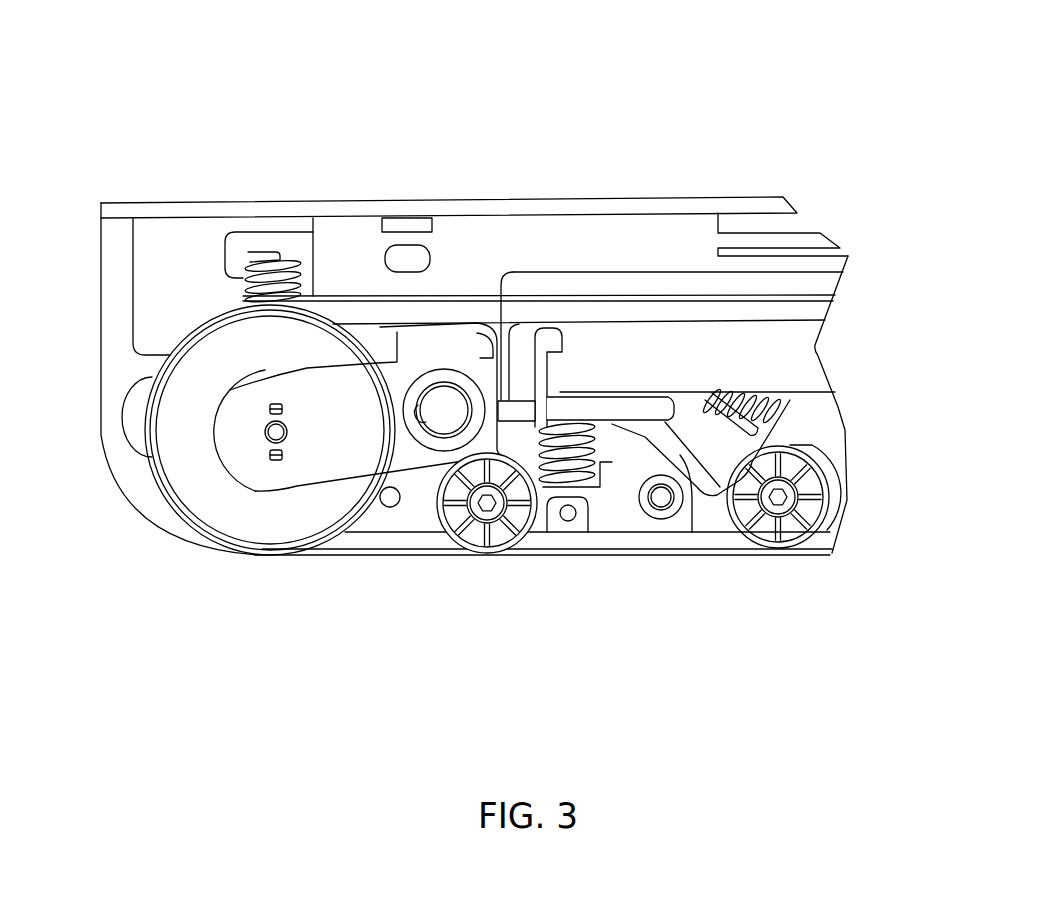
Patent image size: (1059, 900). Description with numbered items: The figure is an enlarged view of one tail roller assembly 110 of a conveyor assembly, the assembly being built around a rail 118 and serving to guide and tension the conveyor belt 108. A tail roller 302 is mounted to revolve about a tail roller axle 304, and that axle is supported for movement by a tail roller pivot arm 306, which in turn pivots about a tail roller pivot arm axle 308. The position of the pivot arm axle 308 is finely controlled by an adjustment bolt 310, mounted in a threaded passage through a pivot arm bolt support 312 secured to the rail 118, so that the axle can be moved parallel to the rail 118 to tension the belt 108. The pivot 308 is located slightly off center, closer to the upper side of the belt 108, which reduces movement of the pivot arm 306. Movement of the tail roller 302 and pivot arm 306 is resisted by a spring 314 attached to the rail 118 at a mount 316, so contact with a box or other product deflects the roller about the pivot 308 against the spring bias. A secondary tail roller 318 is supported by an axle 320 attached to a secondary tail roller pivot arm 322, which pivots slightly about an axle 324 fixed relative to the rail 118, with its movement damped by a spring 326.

The tail roller assembly 110 is at (292, 90).
The rail 118 is at (362, 198).
The conveyor belt 108 is at (772, 290).
The spring 314 is at (243, 298).
The mount 316 is at (273, 245).
The tail roller 302 is at (257, 512).
The tail roller axle 304 is at (273, 432).
The tail roller pivot arm 306 is at (347, 433).
The tail roller pivot arm axle 308 is at (440, 415).
The adjustment bolt 310 is at (518, 398).
The pivot arm bolt support 312 is at (540, 375).
The spring 326 is at (573, 480).
The secondary tail roller pivot arm 322 is at (620, 505).
The axle 324 is at (664, 502).
The axle 320 is at (492, 507).
The secondary tail roller 318 is at (464, 536).